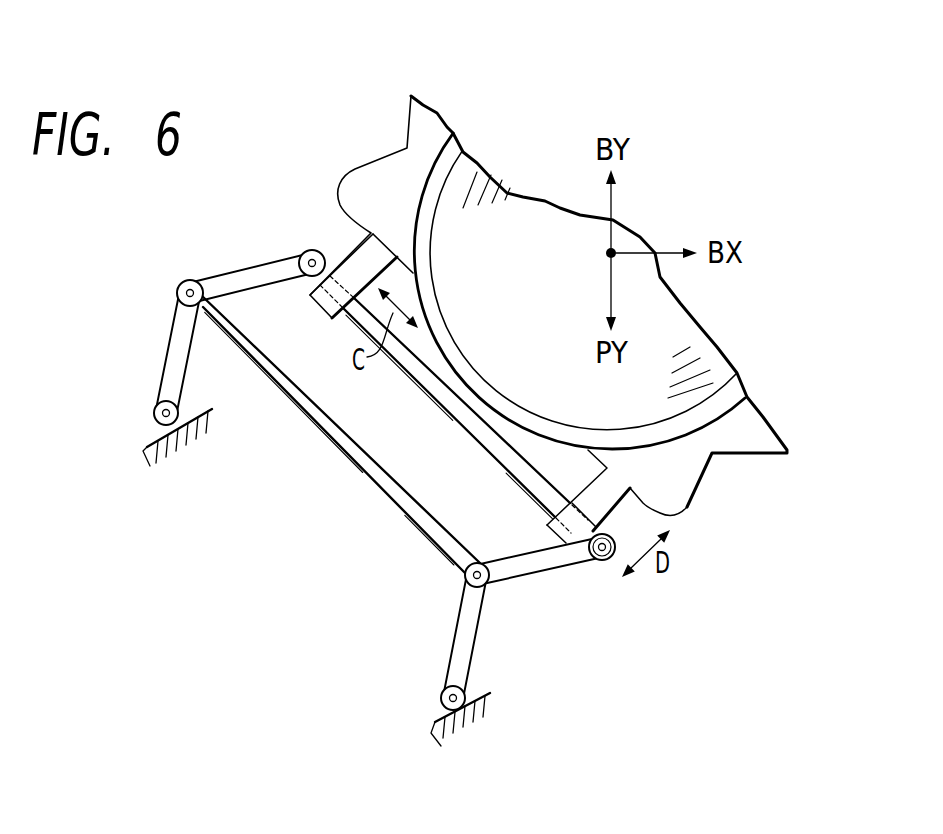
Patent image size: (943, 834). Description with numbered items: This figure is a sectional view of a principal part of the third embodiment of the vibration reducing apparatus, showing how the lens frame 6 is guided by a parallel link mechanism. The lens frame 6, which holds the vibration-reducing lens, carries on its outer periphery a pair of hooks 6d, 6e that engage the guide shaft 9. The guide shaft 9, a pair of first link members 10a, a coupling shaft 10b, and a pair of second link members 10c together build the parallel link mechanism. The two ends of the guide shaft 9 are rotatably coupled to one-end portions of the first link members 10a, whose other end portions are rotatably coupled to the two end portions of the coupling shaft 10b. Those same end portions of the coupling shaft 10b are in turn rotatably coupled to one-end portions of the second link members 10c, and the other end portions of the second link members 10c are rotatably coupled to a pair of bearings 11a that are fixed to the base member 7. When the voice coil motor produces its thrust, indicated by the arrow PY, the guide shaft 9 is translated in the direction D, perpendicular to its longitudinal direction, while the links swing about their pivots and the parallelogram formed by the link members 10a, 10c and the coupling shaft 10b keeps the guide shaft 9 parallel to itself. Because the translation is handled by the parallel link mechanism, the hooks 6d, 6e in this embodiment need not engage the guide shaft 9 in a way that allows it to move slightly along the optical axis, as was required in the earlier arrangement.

The lens frame 6 is at (708, 472).
The hook 6d is at (358, 248).
The hook 6e is at (687, 507).
The base member 7 is at (200, 412).
The guide shaft 9 is at (499, 461).
The first link members 10a is at (243, 265).
The coupling shaft 10b is at (376, 484).
The second link members 10c is at (167, 354).
The bearings 11a is at (155, 423).